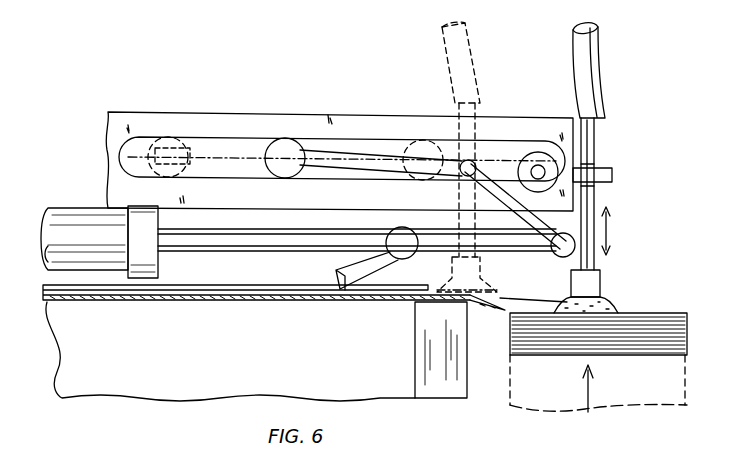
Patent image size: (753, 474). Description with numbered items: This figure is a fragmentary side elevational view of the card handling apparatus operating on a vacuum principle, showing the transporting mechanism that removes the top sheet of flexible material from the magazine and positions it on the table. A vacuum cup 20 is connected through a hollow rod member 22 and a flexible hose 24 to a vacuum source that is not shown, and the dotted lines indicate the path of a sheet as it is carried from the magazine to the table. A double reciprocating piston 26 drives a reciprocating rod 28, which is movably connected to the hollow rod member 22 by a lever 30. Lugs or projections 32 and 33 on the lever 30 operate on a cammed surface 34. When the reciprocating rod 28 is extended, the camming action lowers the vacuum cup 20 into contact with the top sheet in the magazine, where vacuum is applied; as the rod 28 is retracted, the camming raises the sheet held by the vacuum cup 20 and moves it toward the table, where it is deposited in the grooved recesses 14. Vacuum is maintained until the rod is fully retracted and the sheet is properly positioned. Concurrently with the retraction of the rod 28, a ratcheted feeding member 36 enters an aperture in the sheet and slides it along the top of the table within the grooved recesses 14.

The grooved recesses 14 is at (96, 300).
The vacuum cup 20 is at (604, 315).
The hollow rod member 22 is at (598, 266).
The flexible hose 24 is at (455, 55).
The double reciprocating piston 26 is at (80, 190).
The reciprocating rod 28 is at (212, 252).
The lever 30 is at (604, 173).
The lug 32 is at (540, 152).
The lug 33 is at (284, 138).
The cammed surface 34 is at (517, 140).
The ratcheted feeding member 36 is at (344, 290).